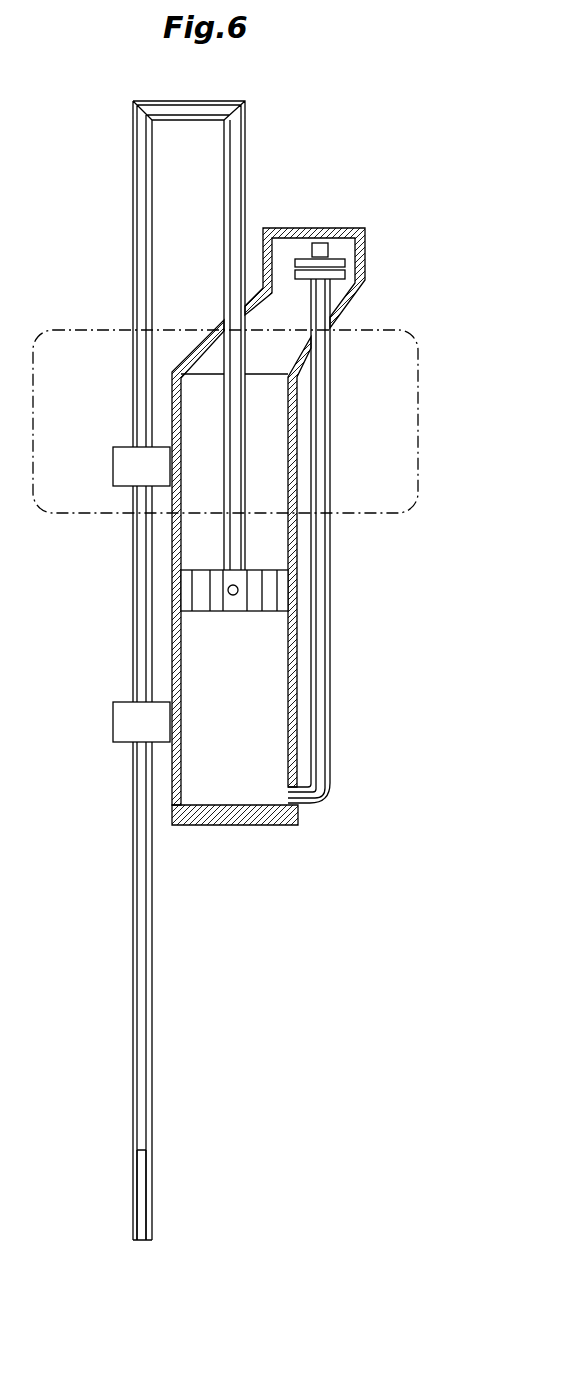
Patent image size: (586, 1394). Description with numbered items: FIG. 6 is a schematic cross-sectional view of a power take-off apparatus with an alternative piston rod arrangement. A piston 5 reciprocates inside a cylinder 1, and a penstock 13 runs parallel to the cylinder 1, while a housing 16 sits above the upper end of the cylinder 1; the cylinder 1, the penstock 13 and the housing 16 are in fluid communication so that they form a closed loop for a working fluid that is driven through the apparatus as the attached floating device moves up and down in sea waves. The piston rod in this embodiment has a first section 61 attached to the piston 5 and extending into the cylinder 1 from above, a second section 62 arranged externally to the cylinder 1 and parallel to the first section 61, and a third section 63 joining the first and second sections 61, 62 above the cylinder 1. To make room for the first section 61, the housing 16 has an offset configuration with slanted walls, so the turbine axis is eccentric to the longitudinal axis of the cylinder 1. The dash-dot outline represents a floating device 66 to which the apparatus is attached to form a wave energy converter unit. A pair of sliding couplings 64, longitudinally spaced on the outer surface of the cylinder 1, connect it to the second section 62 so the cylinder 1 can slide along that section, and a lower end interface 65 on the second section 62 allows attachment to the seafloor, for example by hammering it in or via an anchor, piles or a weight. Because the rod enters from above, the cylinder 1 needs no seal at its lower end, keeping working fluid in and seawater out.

The cylinder 1 is at (238, 730).
The piston 5 is at (256, 594).
The penstock 13 is at (317, 637).
The housing 16 is at (338, 290).
The first section 61 is at (230, 175).
The second section 62 is at (133, 918).
The third section 63 is at (217, 107).
The sliding coupling 64 is at (130, 725).
The lower end interface 65 is at (138, 1190).
The floating device 66 is at (97, 355).